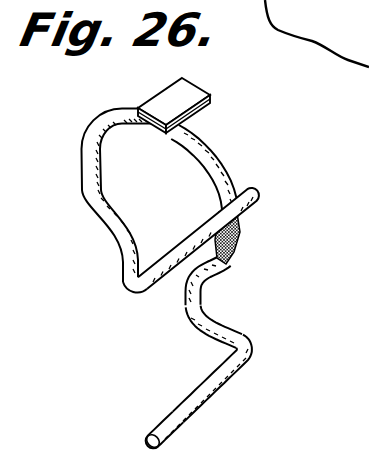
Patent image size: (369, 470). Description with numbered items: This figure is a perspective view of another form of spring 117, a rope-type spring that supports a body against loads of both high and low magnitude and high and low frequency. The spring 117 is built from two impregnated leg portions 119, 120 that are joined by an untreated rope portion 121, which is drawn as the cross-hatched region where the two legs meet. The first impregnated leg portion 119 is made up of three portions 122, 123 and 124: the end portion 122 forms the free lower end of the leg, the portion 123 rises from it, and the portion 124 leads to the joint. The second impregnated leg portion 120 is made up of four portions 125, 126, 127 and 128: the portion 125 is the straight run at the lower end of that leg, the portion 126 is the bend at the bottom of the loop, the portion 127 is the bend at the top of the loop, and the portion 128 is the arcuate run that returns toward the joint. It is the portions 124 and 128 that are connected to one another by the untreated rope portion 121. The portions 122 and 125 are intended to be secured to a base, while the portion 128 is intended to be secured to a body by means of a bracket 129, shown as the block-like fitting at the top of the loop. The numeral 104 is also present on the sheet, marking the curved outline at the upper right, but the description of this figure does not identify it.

The housing wall 104 is at (317, 33).
The spring 117 is at (236, 162).
The impregnated leg portion 119 is at (253, 341).
The impregnated leg portion 120 is at (90, 190).
The untreated rope portion 121 is at (239, 240).
The portion 122 is at (190, 415).
The portion 123 is at (214, 316).
The portion 124 is at (178, 300).
The portion 125 is at (182, 237).
The portion 126 is at (122, 268).
The portion 127 is at (80, 131).
The portion 128 is at (206, 140).
The bracket 129 is at (192, 84).